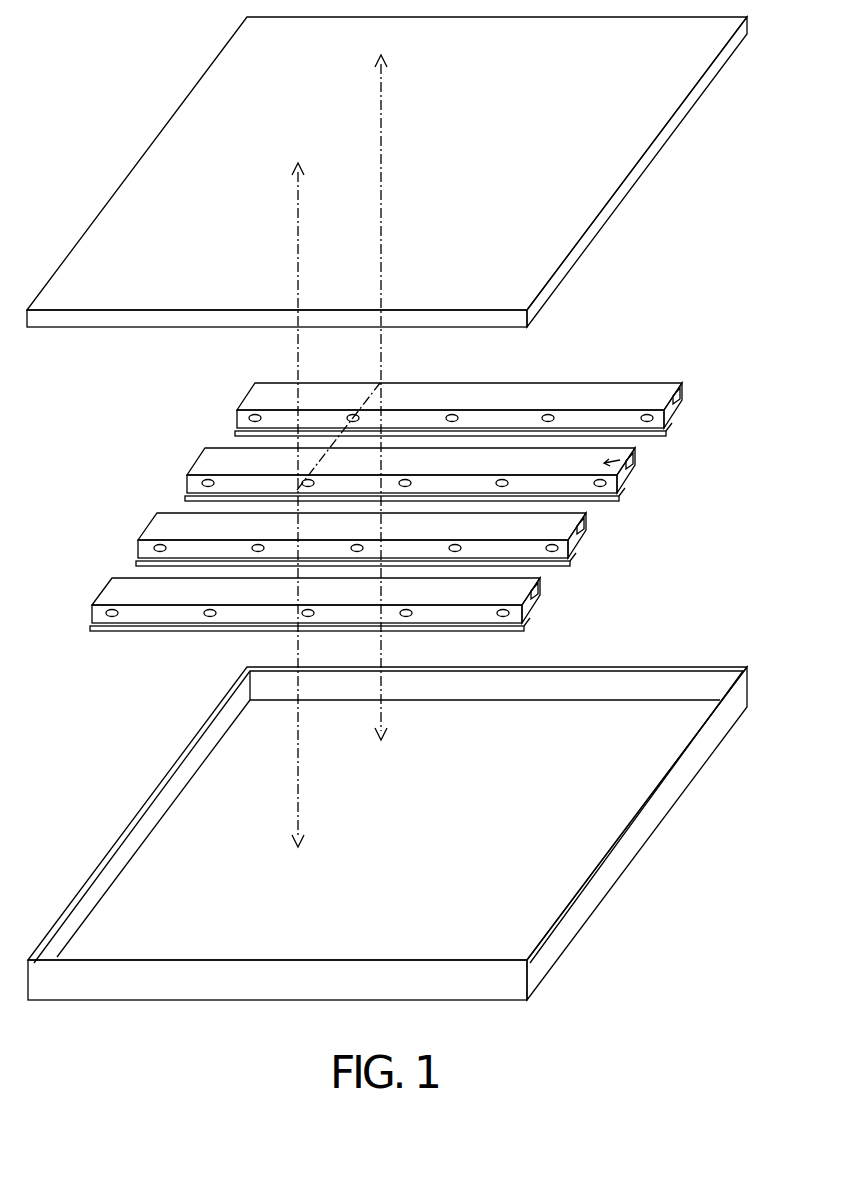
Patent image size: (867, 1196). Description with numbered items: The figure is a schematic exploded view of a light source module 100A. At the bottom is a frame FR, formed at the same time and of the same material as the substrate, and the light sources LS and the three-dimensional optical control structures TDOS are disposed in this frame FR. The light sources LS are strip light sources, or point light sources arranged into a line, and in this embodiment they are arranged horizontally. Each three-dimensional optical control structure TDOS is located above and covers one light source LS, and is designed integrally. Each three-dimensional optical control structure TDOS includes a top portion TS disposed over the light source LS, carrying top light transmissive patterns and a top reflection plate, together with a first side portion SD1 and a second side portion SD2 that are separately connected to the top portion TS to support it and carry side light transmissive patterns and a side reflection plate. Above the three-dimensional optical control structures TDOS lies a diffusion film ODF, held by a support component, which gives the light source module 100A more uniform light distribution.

The light source module 100A is at (699, 1036).
The diffusion film ODF is at (650, 163).
The first side portion SD1 is at (645, 456).
The top portion TS is at (638, 470).
The second side portion SD2 is at (598, 490).
The light source LS is at (361, 614).
The three-dimensional optical control structure TDOS is at (490, 627).
The frame FR is at (128, 852).